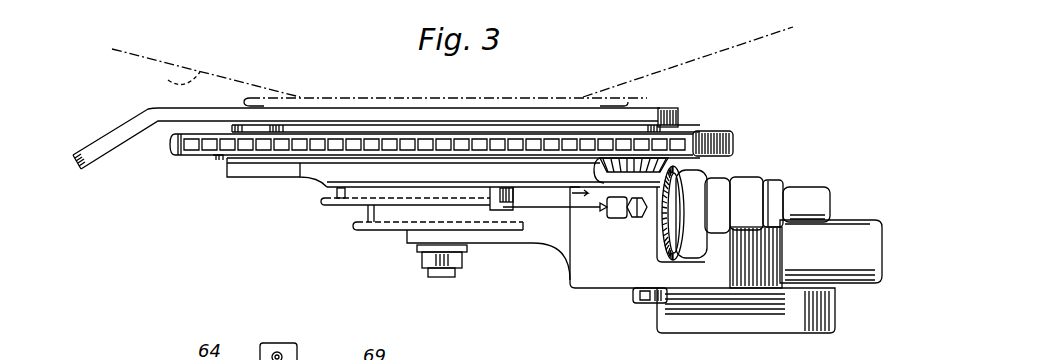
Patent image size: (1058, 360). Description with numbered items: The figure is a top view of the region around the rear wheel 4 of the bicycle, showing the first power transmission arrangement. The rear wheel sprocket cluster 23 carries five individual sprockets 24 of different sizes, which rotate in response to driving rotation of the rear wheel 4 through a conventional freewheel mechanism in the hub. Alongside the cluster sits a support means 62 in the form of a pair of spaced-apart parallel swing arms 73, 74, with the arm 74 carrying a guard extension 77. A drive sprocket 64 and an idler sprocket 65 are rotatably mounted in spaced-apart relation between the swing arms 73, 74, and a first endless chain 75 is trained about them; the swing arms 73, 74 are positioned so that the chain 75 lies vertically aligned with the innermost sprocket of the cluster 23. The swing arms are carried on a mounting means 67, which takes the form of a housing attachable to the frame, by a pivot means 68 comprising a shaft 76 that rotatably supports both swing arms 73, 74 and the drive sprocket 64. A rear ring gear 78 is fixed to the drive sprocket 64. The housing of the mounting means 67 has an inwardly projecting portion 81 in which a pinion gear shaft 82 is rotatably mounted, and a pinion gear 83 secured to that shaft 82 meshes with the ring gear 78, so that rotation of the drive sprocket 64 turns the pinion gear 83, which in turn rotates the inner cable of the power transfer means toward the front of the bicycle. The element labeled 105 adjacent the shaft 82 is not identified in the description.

The rear wheel 4 is at (174, 74).
The swing arm 74 is at (158, 113).
The guard extension 77 is at (107, 152).
The shaft 76 is at (662, 110).
The first endless chain 75 is at (368, 135).
The idler sprocket 65 is at (200, 155).
The drive sprocket 64 is at (717, 133).
The support means 62 is at (273, 167).
The swing arm 73 is at (327, 178).
The individual sprockets 24 is at (370, 232).
The rear wheel sprocket cluster 23 is at (398, 230).
The mounting means 67 is at (580, 297).
The pivot means 68 is at (647, 307).
The rear ring gear 78 is at (693, 163).
The pinion gear 83 is at (665, 233).
The pinion gear shaft 82 is at (767, 172).
The inwardly projecting portion 81 is at (750, 257).
The motor block 105 is at (767, 249).